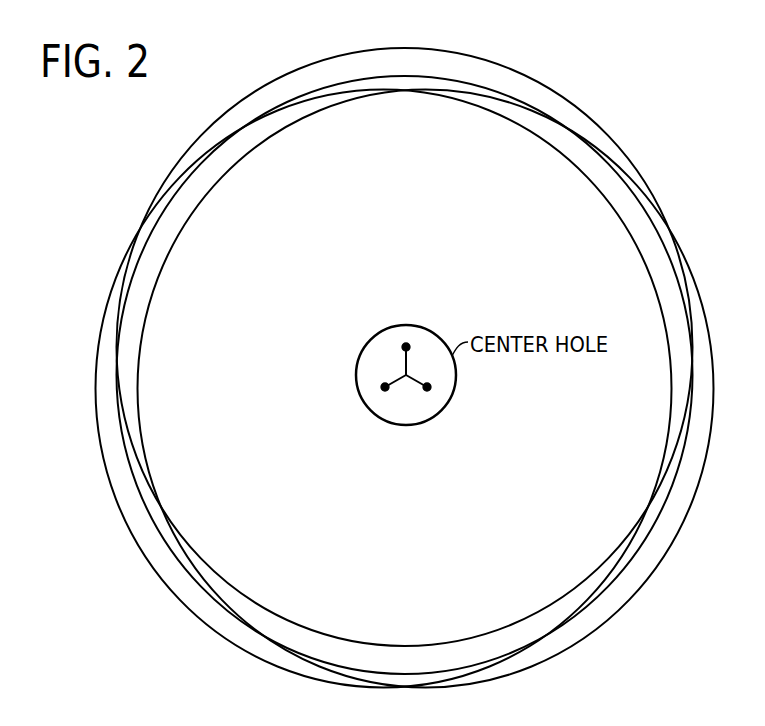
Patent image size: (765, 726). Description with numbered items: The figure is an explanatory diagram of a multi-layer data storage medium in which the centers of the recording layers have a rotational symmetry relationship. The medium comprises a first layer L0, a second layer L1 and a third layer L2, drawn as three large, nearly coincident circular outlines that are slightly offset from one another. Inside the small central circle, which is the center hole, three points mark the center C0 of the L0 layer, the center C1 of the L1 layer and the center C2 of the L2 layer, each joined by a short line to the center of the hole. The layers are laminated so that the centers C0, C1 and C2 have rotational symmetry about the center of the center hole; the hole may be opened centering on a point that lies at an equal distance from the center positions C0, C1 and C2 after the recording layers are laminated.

The first layer L0 is at (538, 80).
The second layer L1 is at (110, 490).
The third layer L2 is at (650, 580).
The center of the L0 layer C0 is at (402, 344).
The center of the L1 layer C1 is at (383, 388).
The center of the L2 layer C2 is at (429, 388).